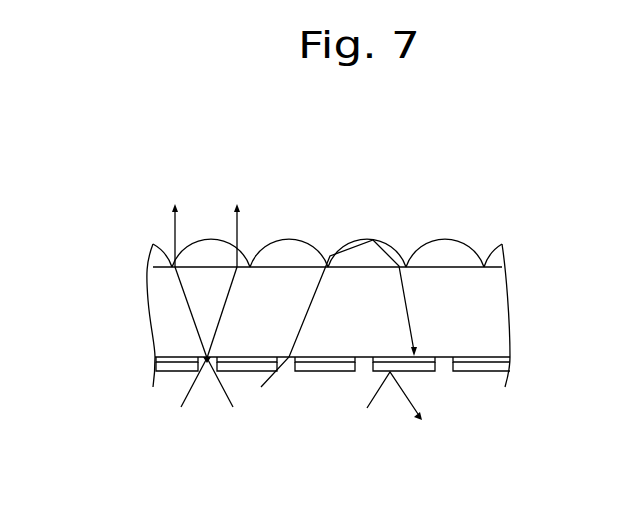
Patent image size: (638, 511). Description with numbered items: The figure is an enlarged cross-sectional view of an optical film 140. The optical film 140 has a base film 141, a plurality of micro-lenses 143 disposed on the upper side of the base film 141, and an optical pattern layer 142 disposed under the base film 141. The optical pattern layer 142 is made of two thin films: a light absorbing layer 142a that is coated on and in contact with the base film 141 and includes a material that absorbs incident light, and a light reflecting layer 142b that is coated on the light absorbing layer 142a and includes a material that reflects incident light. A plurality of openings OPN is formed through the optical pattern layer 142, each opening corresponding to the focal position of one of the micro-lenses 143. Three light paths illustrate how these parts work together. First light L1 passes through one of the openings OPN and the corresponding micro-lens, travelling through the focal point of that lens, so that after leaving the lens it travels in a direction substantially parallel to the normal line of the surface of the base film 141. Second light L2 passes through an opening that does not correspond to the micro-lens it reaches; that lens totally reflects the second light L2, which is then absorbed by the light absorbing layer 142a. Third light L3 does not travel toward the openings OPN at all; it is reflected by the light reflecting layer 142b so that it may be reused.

The optical film 140 is at (515, 186).
The base film 141 is at (495, 310).
The optical pattern layer 142 is at (584, 347).
The light absorbing layer 142a is at (497, 359).
The light reflecting layer 142b is at (498, 367).
The micro-lenses 143 is at (450, 247).
The openings OPN is at (449, 363).
The first light L1 is at (188, 398).
The second light L2 is at (265, 383).
The third light L3 is at (372, 398).